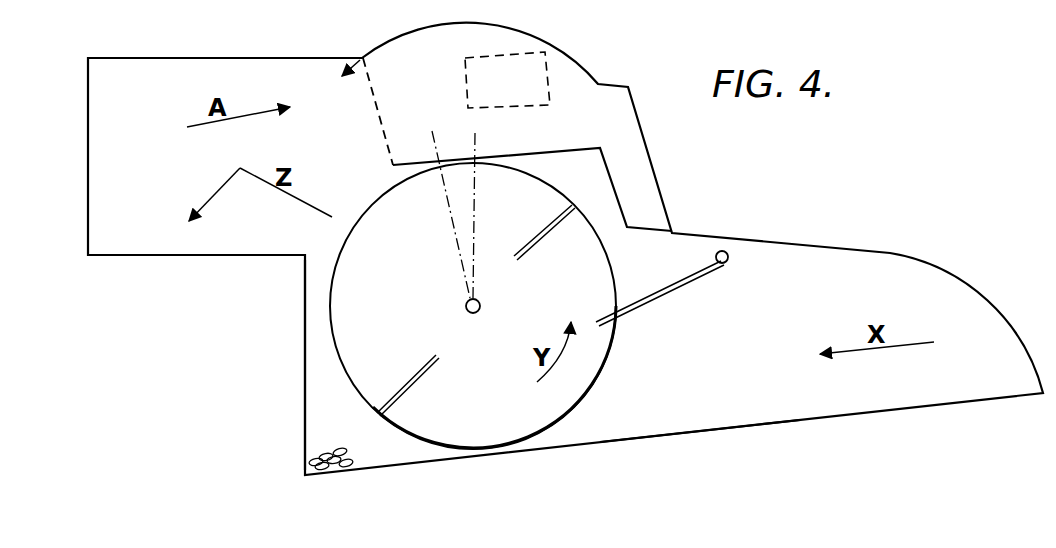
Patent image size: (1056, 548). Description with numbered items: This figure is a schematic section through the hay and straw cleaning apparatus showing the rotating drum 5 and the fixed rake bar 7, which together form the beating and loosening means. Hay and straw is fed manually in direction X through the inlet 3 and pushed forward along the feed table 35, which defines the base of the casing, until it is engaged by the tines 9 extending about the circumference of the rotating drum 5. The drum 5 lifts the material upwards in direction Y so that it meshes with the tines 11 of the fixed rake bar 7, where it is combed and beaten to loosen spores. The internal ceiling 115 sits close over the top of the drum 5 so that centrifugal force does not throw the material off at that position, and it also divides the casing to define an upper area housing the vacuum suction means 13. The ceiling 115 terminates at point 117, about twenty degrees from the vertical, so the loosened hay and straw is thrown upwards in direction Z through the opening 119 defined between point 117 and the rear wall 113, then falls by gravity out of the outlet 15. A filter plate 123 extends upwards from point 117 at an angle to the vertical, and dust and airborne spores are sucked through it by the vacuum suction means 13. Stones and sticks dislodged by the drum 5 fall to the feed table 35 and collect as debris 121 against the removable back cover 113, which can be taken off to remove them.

The inlet 3 is at (942, 305).
The rotating drum 5 is at (562, 395).
The fixed rake bar 7 is at (728, 259).
The tines 9 is at (548, 215).
The tines 11 is at (650, 305).
The vacuum suction means 13 is at (514, 98).
The outlet 15 is at (207, 293).
The feed table 35 is at (727, 431).
The removable back cover 113 is at (305, 372).
The internal ceiling 115 is at (617, 186).
The termination point 117 is at (394, 164).
The opening 119 is at (305, 192).
The debris 121 is at (320, 456).
The filter plate 123 is at (378, 100).